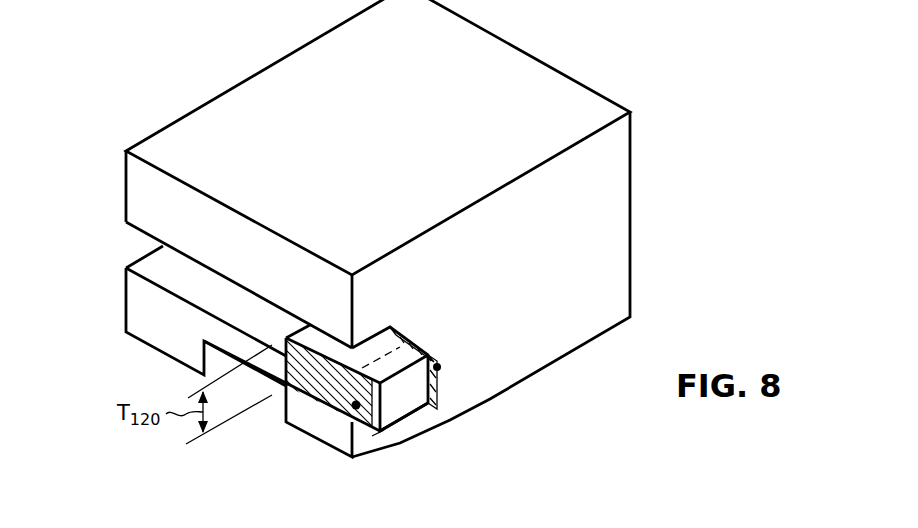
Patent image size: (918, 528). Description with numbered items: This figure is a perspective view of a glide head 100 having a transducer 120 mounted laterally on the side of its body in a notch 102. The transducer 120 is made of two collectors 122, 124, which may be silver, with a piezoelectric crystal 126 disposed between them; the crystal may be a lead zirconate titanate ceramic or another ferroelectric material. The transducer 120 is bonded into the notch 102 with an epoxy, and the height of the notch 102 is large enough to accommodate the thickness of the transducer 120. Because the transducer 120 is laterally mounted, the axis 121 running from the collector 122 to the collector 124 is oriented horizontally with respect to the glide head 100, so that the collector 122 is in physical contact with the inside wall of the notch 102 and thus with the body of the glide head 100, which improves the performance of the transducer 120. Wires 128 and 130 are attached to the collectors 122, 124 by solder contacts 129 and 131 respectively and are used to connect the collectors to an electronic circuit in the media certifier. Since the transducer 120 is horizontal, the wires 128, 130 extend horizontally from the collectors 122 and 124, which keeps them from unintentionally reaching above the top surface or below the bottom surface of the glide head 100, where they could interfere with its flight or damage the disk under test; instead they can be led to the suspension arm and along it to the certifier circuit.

The glide head 100 is at (654, 90).
The notch 102 is at (133, 247).
The transducer 120 is at (400, 314).
The axis 121 is at (412, 334).
The collector 122 is at (432, 406).
The collector 124 is at (378, 436).
The piezoelectric crystal 126 is at (392, 416).
The wire 128 is at (442, 362).
The solder contact 129 is at (440, 367).
The wire 130 is at (348, 396).
The solder contact 131 is at (355, 406).